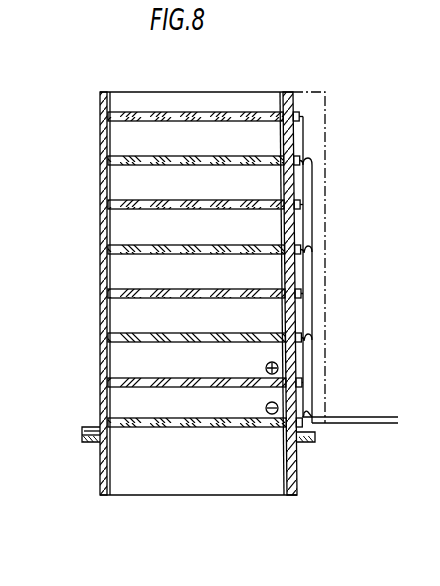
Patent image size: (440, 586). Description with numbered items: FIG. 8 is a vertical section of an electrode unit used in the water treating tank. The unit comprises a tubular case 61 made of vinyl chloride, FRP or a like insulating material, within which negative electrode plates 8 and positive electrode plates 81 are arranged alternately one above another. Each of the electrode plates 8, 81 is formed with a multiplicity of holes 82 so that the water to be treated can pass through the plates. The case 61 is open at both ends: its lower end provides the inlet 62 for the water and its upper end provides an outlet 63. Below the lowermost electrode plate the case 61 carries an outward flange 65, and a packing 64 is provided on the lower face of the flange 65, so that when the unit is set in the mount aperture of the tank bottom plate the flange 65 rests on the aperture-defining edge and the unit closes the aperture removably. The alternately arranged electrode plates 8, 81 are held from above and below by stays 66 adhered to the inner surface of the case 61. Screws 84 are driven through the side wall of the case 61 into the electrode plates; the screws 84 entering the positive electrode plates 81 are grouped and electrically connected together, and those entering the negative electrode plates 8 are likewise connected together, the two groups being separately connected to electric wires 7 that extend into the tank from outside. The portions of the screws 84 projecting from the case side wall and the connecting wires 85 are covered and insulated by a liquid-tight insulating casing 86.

The electric wires 7 is at (385, 428).
The negative electrode plates 8 is at (185, 343).
The tubular case 61 is at (100, 212).
The inlet 62 is at (270, 495).
The outlet 63 is at (212, 92).
The packing 64 is at (85, 443).
The outward flange 65 is at (88, 426).
The stays 66 is at (111, 404).
The positive electrode plates 81 is at (187, 300).
The holes 82 is at (215, 428).
The screws 84 is at (299, 382).
The connecting wires 85 is at (308, 276).
The insulating casing 86 is at (325, 120).